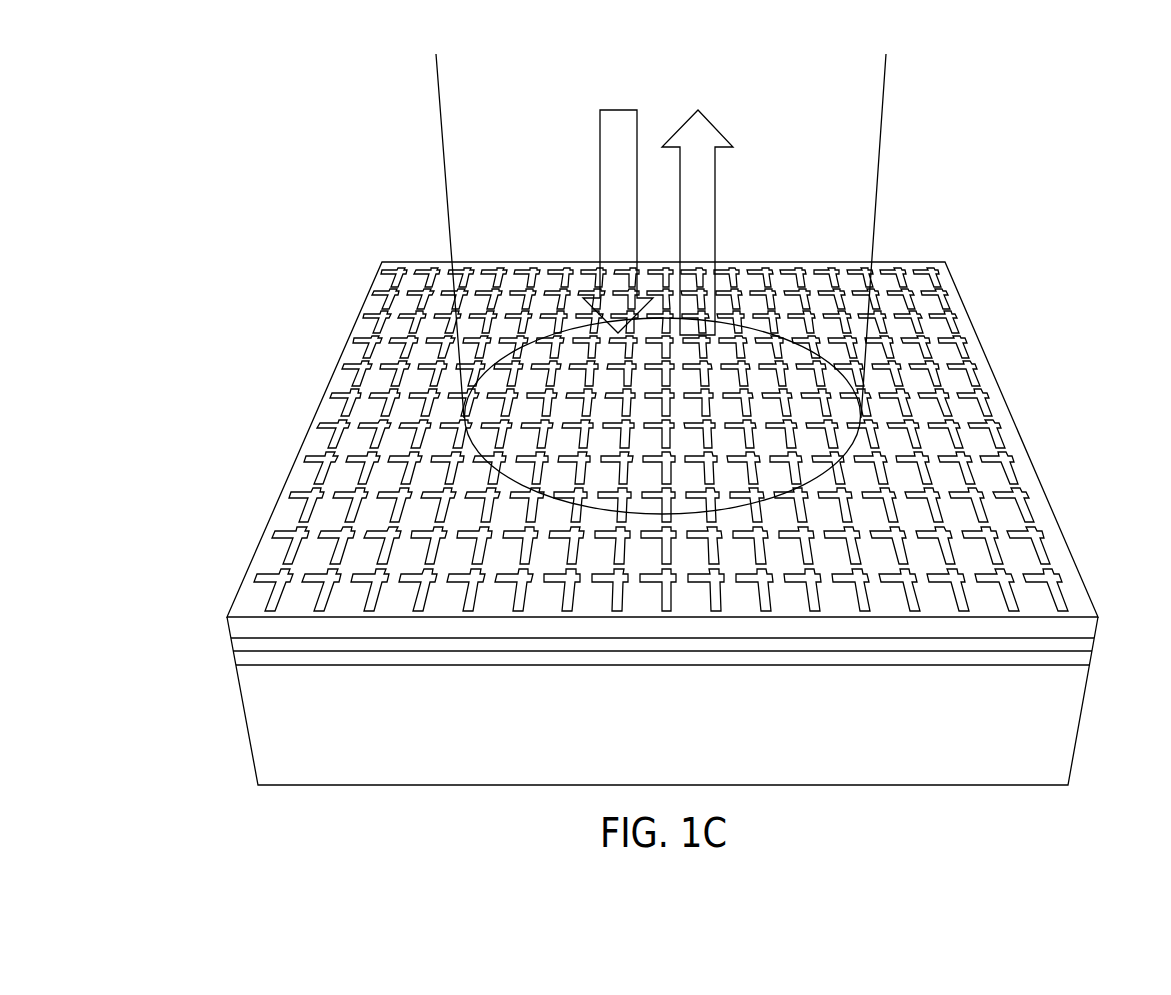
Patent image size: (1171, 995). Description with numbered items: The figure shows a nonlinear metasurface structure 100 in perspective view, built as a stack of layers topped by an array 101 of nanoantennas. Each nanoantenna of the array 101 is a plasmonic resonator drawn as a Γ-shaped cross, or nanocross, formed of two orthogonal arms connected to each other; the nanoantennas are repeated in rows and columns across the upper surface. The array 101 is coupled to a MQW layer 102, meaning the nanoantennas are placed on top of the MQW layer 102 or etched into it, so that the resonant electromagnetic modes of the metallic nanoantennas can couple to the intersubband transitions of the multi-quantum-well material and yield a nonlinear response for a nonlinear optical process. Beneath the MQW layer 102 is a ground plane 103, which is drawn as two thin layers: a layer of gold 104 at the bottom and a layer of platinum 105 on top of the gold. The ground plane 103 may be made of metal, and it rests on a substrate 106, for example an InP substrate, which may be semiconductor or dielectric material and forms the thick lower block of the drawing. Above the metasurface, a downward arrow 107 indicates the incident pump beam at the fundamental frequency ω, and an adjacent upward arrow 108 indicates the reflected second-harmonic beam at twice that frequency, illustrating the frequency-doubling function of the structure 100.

The nonlinear metasurface structure 100 is at (1066, 312).
The array of nanoantennas 101 is at (947, 249).
The MQW layer 102 is at (1100, 629).
The ground plane 103 is at (233, 637).
The layer of gold 104 is at (1091, 661).
The layer of platinum 105 is at (1094, 644).
The substrate 106 is at (913, 770).
The arrow indicating incident pump beam 107 is at (600, 193).
The arrow indicating reflected second-harmonic beam 108 is at (716, 210).